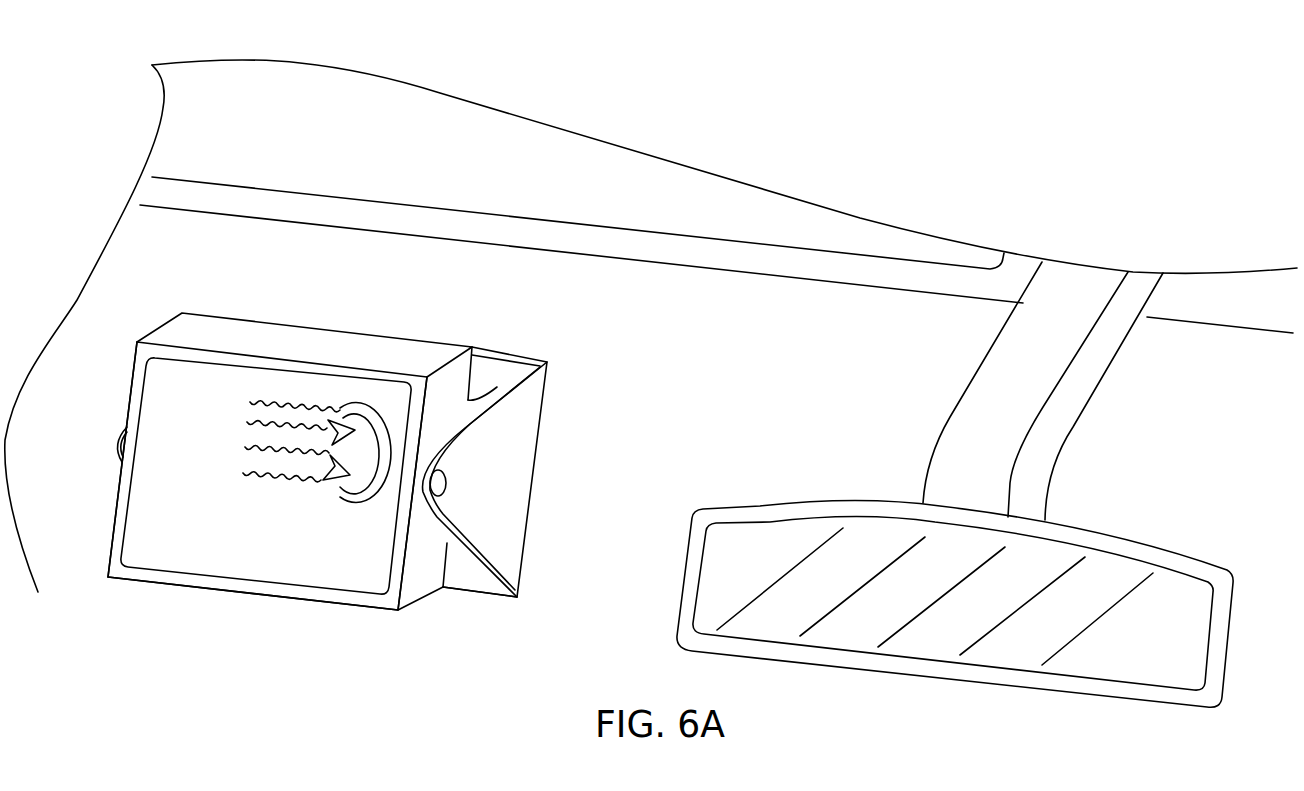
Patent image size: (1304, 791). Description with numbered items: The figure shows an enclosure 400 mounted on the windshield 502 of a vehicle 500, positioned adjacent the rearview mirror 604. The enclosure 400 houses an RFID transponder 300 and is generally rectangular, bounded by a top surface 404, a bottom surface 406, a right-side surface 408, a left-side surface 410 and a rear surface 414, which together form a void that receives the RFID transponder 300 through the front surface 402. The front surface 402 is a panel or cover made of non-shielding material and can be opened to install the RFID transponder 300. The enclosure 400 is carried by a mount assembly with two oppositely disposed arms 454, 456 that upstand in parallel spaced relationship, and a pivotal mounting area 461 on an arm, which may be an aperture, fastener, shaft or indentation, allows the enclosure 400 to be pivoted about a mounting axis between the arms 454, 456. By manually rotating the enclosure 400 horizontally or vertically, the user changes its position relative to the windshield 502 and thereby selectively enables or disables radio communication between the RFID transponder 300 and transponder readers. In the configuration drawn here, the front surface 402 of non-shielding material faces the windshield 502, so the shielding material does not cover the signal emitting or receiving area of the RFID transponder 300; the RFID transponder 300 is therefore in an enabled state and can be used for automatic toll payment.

The RFID transponder 300 is at (177, 370).
The enclosure 400 is at (413, 332).
The front surface 402 is at (535, 362).
The top surface 404 is at (218, 592).
The bottom surface 406 is at (302, 342).
The right-side surface 408 is at (455, 367).
The left-side surface 410 is at (132, 415).
The rear surface 414 is at (372, 583).
The arm 454 is at (510, 580).
The arm 456 is at (118, 460).
The pivotal mounting area 461 is at (447, 485).
The vehicle 500 is at (373, 152).
The windshield 502 is at (715, 290).
The rearview mirror 604 is at (1110, 535).